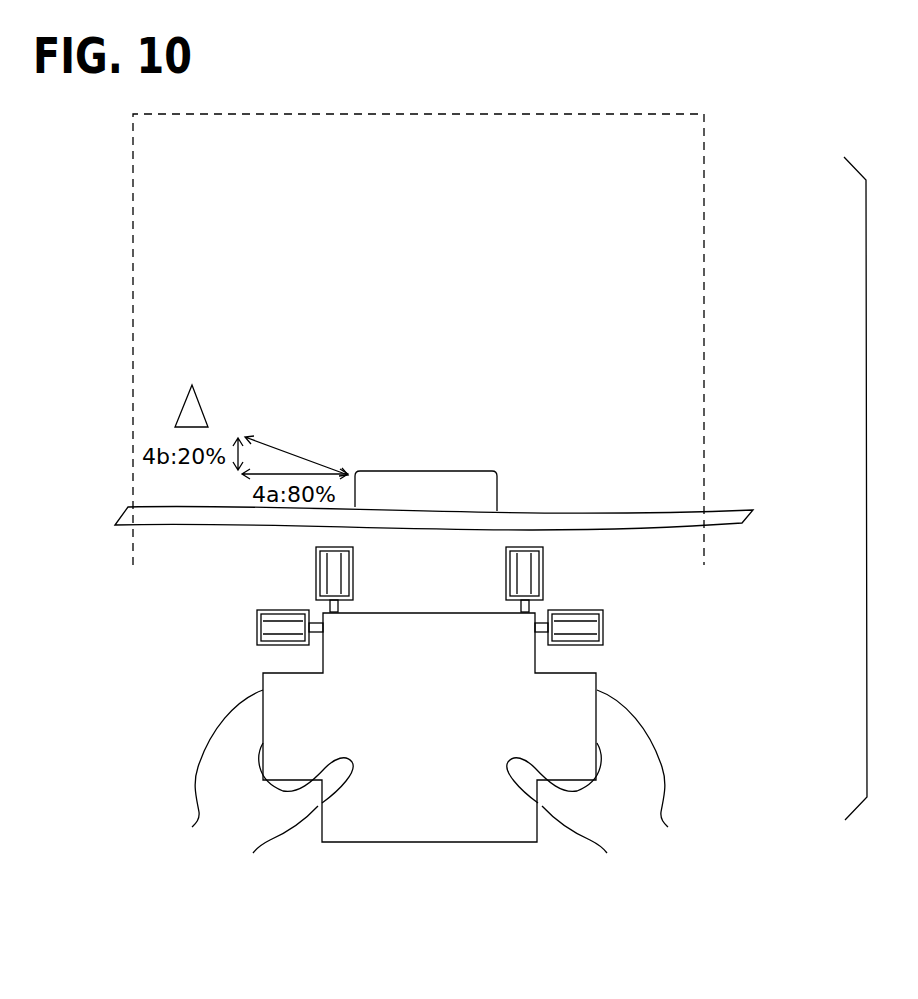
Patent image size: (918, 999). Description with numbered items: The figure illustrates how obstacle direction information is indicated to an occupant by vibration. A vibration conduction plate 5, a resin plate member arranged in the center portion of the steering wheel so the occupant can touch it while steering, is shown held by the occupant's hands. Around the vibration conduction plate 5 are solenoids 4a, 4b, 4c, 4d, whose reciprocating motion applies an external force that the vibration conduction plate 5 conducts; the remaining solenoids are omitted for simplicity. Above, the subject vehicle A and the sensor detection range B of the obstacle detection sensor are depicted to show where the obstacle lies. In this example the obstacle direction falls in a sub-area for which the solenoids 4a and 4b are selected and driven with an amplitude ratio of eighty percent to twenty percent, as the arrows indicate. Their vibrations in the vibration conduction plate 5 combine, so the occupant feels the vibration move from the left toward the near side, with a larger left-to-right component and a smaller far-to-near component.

The solenoid 4a is at (257, 628).
The solenoid 4b is at (316, 575).
The solenoid 4c is at (543, 575).
The solenoid 4d is at (603, 626).
The vibration conduction plate 5 is at (430, 613).
The subject vehicle A is at (475, 471).
The sensor detection range B is at (198, 398).